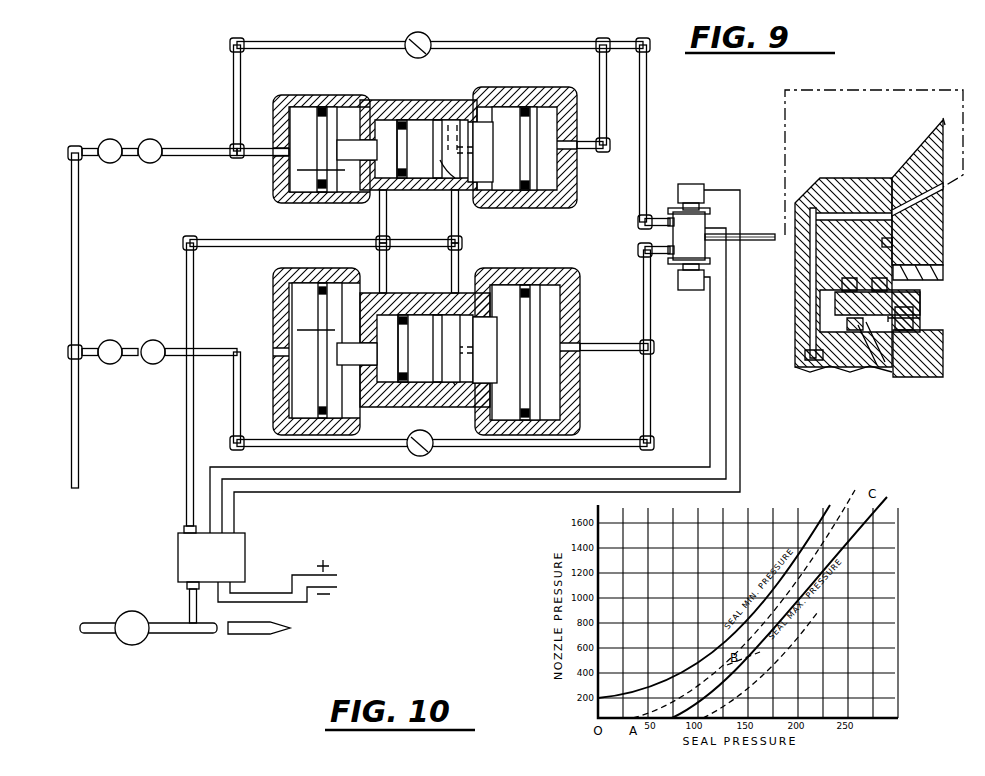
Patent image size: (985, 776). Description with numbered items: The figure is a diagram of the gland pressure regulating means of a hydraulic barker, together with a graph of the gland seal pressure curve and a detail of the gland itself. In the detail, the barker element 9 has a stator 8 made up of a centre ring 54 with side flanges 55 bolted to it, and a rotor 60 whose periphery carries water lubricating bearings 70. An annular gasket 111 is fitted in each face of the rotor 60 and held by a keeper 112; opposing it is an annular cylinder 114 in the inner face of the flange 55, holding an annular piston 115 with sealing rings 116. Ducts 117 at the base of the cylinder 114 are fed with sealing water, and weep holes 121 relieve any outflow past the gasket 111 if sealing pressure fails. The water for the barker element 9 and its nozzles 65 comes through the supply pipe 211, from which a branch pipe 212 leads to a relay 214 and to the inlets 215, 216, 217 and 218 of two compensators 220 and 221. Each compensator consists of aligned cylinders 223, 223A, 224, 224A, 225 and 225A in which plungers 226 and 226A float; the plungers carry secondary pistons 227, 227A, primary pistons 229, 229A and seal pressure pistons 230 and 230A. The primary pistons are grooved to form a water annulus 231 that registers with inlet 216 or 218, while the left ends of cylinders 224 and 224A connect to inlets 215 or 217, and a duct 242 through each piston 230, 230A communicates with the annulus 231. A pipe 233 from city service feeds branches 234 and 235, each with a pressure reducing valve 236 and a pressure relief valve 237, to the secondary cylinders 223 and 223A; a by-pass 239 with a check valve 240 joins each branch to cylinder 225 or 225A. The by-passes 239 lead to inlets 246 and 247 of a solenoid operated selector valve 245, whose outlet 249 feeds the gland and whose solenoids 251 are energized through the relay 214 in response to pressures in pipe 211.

In FIG. 10, the supply pipe 211 is at (118, 606).
In FIG. 10, the branch pipe 212 is at (189, 600).
In FIG. 10, the relay 214 is at (195, 563).
In FIG. 10, the high pressure inlet 215 is at (379, 217).
In FIG. 10, the high pressure inlet 216 is at (451, 224).
In FIG. 10, the high pressure inlet 217 is at (387, 264).
In FIG. 10, the high pressure inlet 218 is at (459, 257).
In FIG. 10, the compensator 220 is at (282, 189).
In FIG. 10, the compensator 221 is at (282, 300).
In FIG. 10, the secondary cylinder 223 is at (312, 118).
In FIG. 10, the secondary cylinder 223A is at (300, 290).
In FIG. 10, the cylinder 224 is at (418, 112).
In FIG. 10, the cylinder 224A is at (398, 310).
In FIG. 10, the cylinder 225 is at (565, 180).
In FIG. 10, the cylinder 225A is at (565, 388).
In FIG. 10, the plunger 226 is at (336, 140).
In FIG. 10, the plunger 226A is at (336, 335).
In FIG. 10, the secondary piston 227 is at (300, 172).
In FIG. 10, the secondary piston 227A is at (298, 325).
In FIG. 10, the primary piston 229 is at (398, 122).
In FIG. 10, the primary piston 229A is at (404, 396).
In FIG. 10, the seal pressure piston 230 is at (520, 110).
In FIG. 10, the seal pressure piston 230A is at (520, 292).
In FIG. 10, the water annulus 231 is at (444, 185).
In FIG. 10, the pipe 233 is at (80, 430).
In FIG. 10, the branch 234 is at (92, 158).
In FIG. 10, the branch 235 is at (92, 360).
In FIG. 10, the pressure reducing valve 236 is at (108, 139).
In FIG. 10, the pressure relief valve 237 is at (152, 139).
In FIG. 10, the by-pass 239 is at (318, 48).
In FIG. 10, the check valve 240 is at (432, 38).
In FIG. 10, the duct 242 is at (492, 239).
In FIG. 10, the solenoid operated selector valve 245 is at (700, 215).
In FIG. 10, the inlet 246 is at (642, 228).
In FIG. 10, the inlet 247 is at (642, 246).
In FIG. 10, the outlet 249 is at (745, 242).
In FIG. 10, the solenoid 251 is at (690, 185).
In FIG. 10, the nozzle 65 is at (262, 631).
In FIG. 9, the stator 8 is at (915, 150).
In FIG. 9, the barker element 9 is at (915, 377).
In FIG. 9, the centre ring 54 is at (942, 120).
In FIG. 9, the side flange 55 is at (858, 178).
In FIG. 9, the rotor 60 is at (943, 343).
In FIG. 9, the water lubricating bearing 70 is at (943, 270).
In FIG. 9, the annular gasket 111 is at (922, 300).
In FIG. 9, the keeper 112 is at (920, 322).
In FIG. 9, the annular cylinder 114 is at (848, 330).
In FIG. 9, the annular piston 115 is at (847, 278).
In FIG. 9, the sealing ring 116 is at (880, 278).
In FIG. 9, the duct 117 is at (943, 200).
In FIG. 9, the weep hole 121 is at (870, 372).